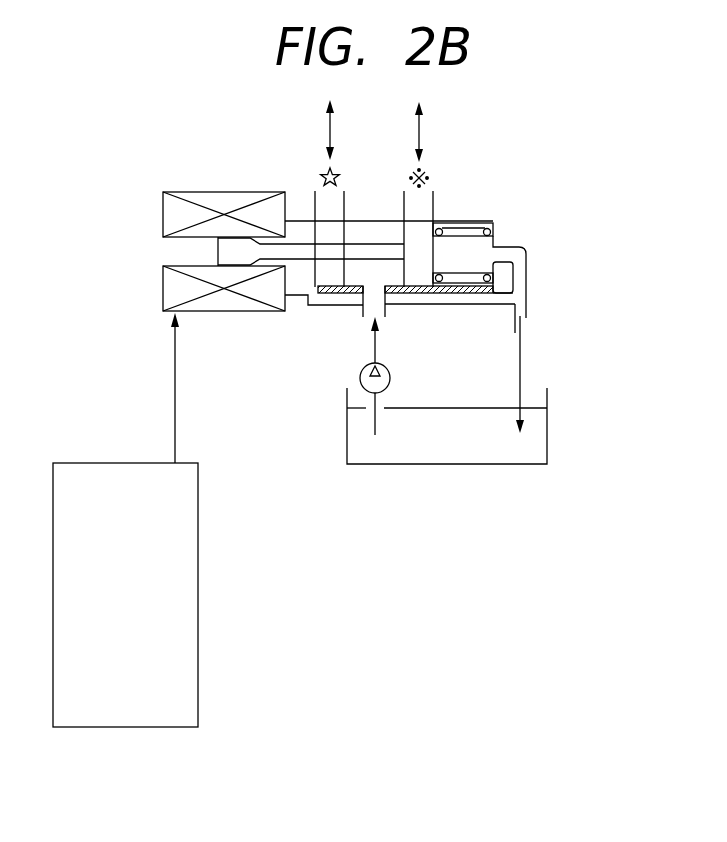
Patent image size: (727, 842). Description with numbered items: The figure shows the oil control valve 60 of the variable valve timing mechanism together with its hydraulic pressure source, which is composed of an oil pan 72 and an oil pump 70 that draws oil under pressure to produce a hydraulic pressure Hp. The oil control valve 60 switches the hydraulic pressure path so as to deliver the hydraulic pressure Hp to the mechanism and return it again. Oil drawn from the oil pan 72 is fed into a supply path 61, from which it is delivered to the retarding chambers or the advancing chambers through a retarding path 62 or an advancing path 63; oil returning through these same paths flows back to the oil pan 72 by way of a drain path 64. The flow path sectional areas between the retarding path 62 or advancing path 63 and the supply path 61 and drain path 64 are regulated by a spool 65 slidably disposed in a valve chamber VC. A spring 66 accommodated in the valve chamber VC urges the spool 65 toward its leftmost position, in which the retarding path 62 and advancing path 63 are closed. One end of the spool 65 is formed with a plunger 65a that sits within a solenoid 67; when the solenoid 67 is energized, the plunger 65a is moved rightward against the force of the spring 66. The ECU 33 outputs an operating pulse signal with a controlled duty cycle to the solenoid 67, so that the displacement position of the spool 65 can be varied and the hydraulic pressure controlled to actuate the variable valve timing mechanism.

The oil control valve 60 is at (545, 158).
The supply path 61 is at (363, 313).
The retarding path 62 is at (346, 208).
The advancing path 63 is at (434, 207).
The drain path 64 is at (527, 288).
The spool 65 is at (297, 240).
The plunger 65a is at (223, 250).
The spring 66 is at (472, 222).
The solenoid 67 is at (229, 313).
The oil pump 70 is at (367, 394).
The oil pan 72 is at (548, 427).
The ECU 33 is at (102, 463).
The hydraulic pressure Hp is at (373, 351).
The valve chamber VC is at (391, 287).